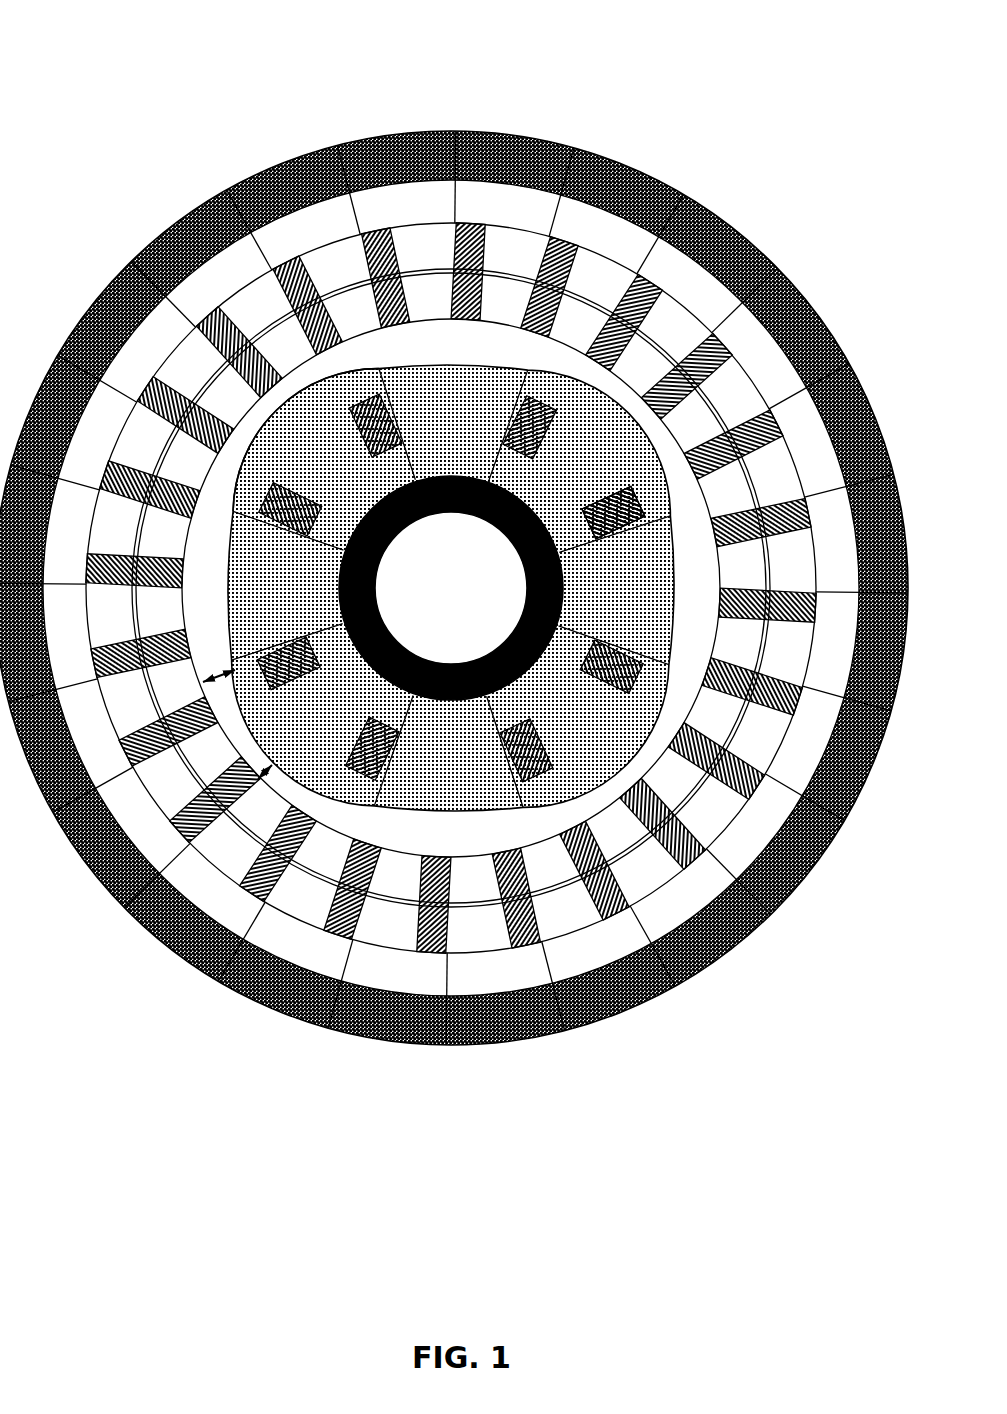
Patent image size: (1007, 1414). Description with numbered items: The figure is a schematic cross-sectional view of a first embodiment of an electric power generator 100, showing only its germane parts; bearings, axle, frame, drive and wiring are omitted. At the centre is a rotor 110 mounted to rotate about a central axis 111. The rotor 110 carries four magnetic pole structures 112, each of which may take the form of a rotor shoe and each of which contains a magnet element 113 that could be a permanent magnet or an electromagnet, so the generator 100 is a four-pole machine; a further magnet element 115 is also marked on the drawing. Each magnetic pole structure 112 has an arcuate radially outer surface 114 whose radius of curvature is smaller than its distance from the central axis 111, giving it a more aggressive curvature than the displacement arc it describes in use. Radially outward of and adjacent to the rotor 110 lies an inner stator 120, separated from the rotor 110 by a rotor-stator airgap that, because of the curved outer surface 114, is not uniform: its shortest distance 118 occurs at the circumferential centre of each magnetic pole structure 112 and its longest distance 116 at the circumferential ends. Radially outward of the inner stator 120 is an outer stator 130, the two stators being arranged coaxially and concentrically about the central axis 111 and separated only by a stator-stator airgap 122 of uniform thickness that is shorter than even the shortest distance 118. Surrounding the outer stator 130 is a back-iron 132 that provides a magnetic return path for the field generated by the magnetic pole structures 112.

The electric power generator 100 is at (454, 524).
The rotor 110 is at (431, 484).
The central axis 111 is at (468, 607).
The magnetic pole structure 112 is at (326, 542).
The magnet element 113 is at (278, 530).
The arcuate radially outer surface 114 is at (238, 485).
The permanent magnet 115 is at (613, 512).
The longest distance of rotor-stator airgap 116 is at (216, 670).
The shortest distance of rotor-stator airgap 118 is at (275, 776).
The inner stator 120 is at (454, 588).
The stator-stator airgap 122 is at (200, 368).
The outer stator 130 is at (247, 305).
The back-iron 132 is at (160, 263).